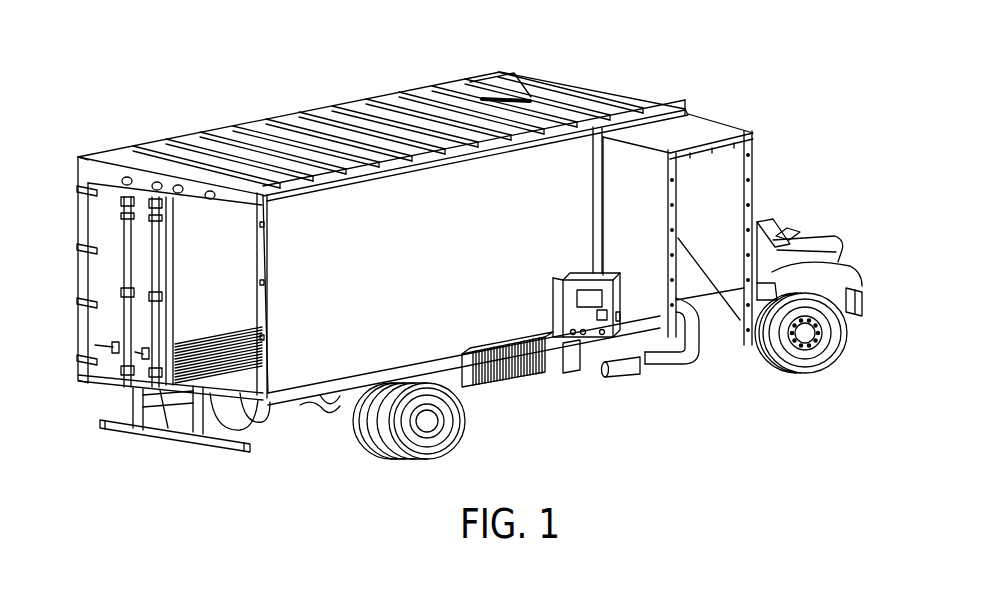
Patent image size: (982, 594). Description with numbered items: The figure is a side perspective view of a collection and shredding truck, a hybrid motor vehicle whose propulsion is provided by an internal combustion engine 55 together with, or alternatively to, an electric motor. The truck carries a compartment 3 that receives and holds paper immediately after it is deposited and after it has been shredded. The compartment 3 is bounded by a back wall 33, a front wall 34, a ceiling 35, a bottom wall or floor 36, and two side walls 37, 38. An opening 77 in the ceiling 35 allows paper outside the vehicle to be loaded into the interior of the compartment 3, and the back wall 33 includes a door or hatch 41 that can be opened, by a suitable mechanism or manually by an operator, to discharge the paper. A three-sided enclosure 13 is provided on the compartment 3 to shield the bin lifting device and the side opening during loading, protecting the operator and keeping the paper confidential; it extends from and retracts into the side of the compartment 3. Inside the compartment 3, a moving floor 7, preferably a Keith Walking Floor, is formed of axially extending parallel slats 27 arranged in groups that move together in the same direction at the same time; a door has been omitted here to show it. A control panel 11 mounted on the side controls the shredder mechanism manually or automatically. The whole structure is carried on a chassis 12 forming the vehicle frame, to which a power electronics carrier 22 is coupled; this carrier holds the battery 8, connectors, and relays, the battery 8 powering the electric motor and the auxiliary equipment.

The compartment 3 is at (230, 125).
The moving floor 7 is at (200, 382).
The battery 8 is at (527, 372).
The control panel 11 is at (592, 318).
The chassis 12 is at (860, 310).
The enclosure 13 is at (740, 320).
The power electronics carrier 22 is at (497, 385).
The parallel slats 27 is at (230, 418).
The back wall 33 is at (95, 318).
The front wall 34 is at (688, 113).
The ceiling 35 is at (120, 158).
The bottom wall or floor 36 is at (177, 357).
The side wall 37 is at (217, 285).
The side wall 38 is at (363, 343).
The door or hatch 41 is at (124, 228).
The internal combustion engine 55 is at (794, 234).
The opening 77 is at (507, 98).